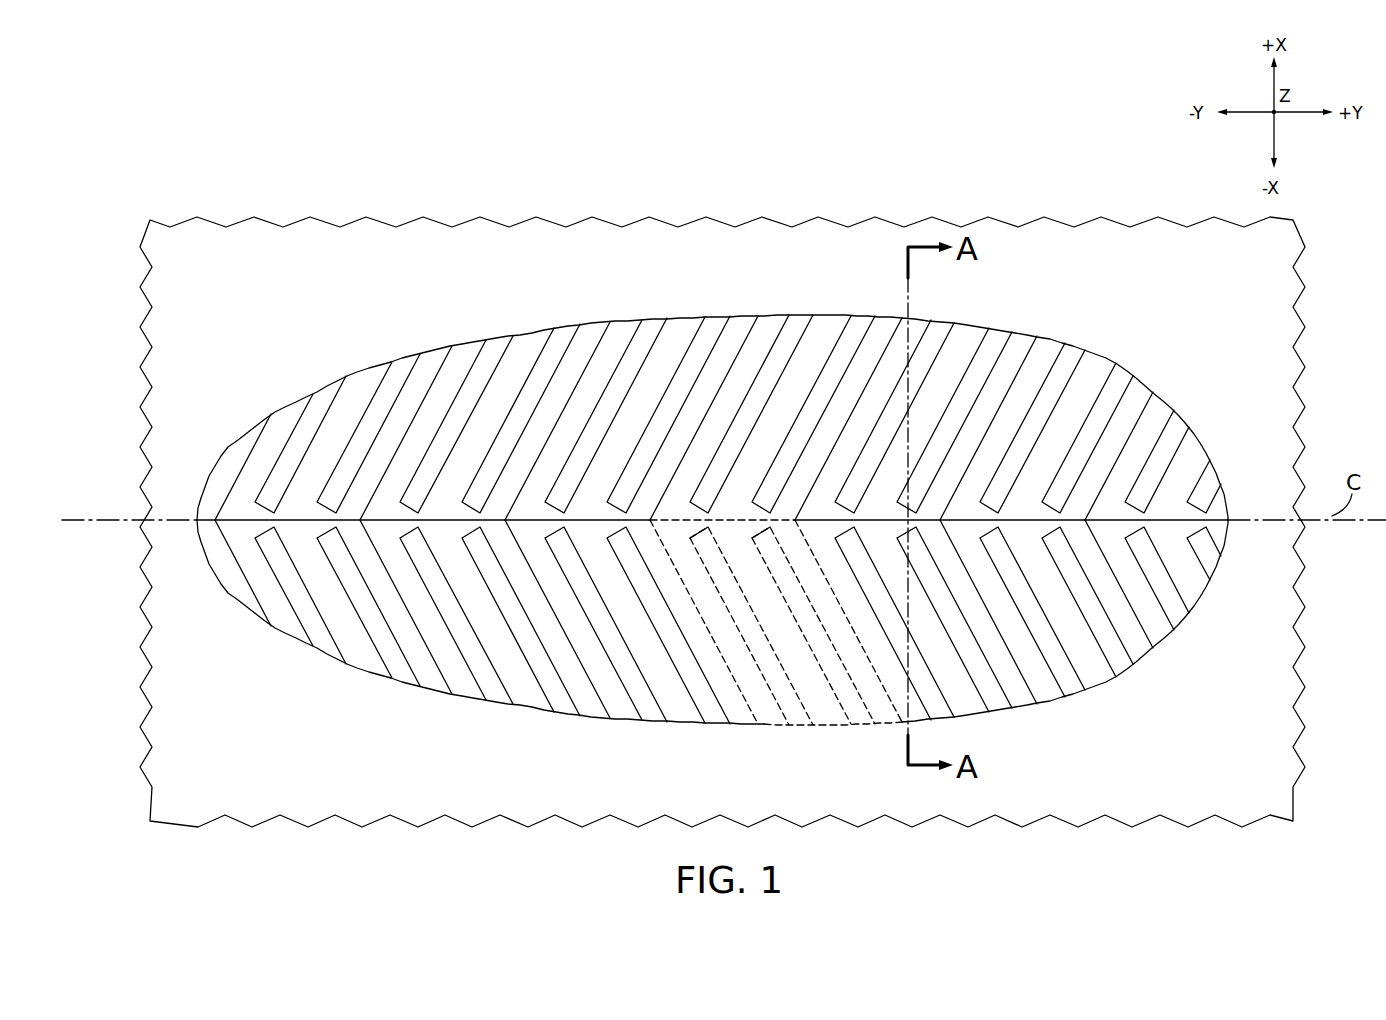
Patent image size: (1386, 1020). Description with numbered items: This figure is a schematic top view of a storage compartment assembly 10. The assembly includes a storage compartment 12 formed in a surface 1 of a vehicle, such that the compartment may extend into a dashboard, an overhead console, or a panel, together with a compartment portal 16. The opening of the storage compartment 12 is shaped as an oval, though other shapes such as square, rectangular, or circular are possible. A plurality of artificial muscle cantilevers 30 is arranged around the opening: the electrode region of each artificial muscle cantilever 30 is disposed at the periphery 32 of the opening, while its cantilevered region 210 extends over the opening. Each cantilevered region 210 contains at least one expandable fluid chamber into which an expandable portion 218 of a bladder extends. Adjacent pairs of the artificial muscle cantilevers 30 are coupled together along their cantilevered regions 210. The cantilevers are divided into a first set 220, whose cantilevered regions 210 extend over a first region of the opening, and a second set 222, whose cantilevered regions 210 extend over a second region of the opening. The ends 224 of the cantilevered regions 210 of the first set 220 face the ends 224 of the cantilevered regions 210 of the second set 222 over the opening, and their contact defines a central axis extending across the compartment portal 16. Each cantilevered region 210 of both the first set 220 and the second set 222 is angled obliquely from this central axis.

The surface 1 is at (722, 492).
The storage compartment assembly 10 is at (193, 232).
The storage compartment 12 is at (776, 581).
The compartment portal 16 is at (712, 511).
The artificial muscle cantilever 30 is at (749, 490).
The periphery 32 is at (623, 319).
The cantilevered region 210 is at (1040, 350).
The expandable portion 218 is at (927, 332).
The first set 220 is at (748, 314).
The second set 222 is at (540, 724).
The ends 224 is at (1150, 521).